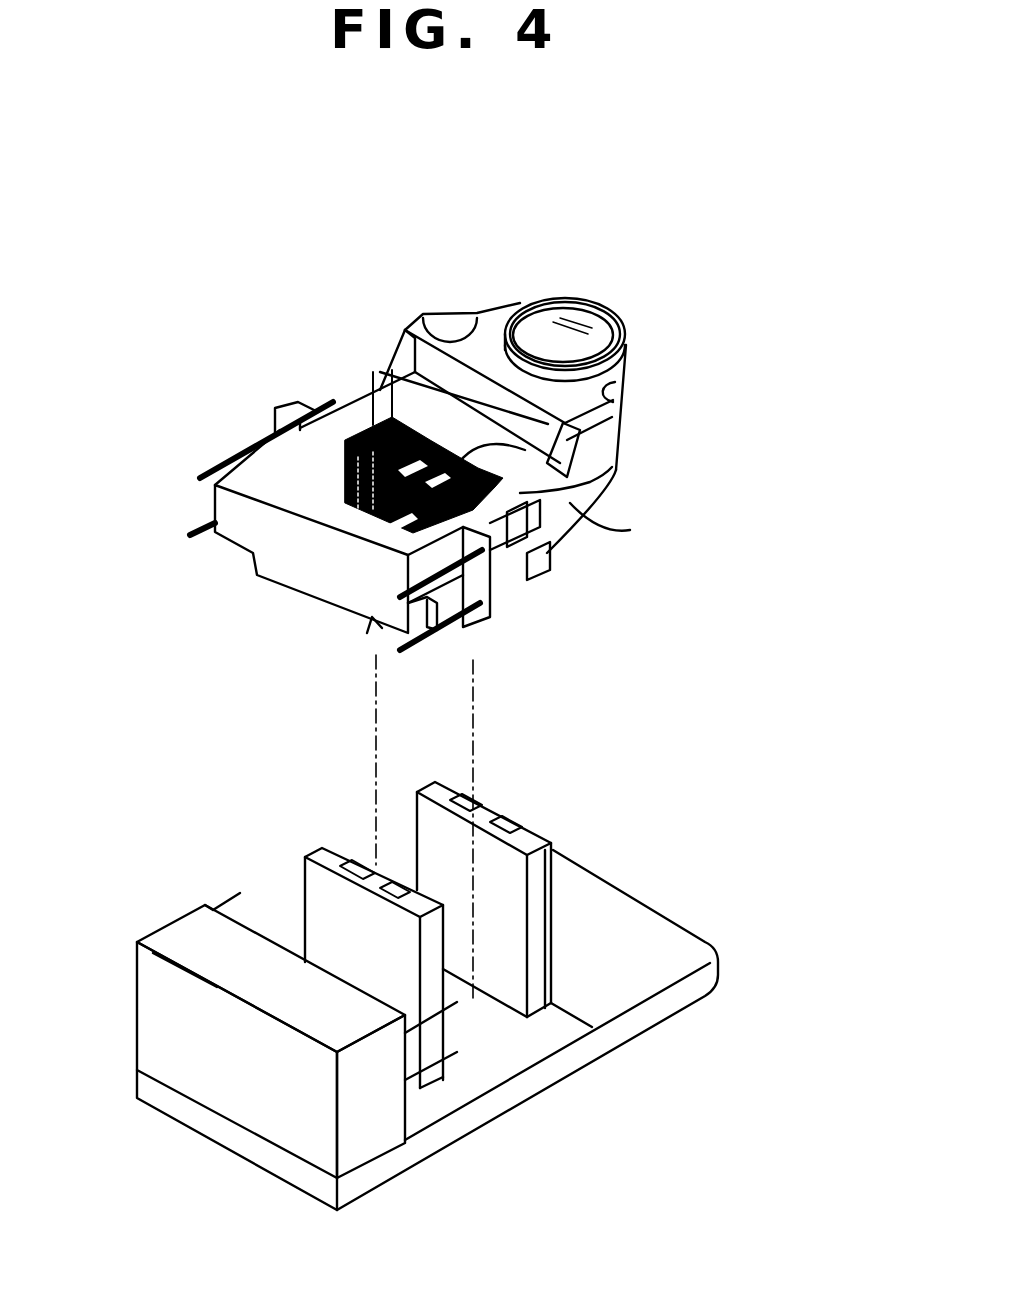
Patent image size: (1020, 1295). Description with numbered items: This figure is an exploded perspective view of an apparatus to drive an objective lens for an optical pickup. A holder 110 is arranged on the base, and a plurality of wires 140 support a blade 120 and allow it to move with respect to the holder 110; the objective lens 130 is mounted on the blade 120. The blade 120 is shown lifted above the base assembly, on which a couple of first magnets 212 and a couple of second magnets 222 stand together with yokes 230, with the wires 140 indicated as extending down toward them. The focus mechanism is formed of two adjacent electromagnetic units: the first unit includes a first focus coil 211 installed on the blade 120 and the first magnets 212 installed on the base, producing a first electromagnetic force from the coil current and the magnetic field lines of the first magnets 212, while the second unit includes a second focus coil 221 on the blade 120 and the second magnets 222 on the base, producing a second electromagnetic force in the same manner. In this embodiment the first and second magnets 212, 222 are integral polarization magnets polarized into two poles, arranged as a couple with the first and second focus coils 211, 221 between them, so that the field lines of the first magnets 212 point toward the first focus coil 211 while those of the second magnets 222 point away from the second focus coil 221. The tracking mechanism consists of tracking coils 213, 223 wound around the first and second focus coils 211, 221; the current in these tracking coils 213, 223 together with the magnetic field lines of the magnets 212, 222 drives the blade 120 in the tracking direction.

The holder 110 is at (182, 940).
The blade 120 is at (257, 463).
The objective lens 130 is at (577, 300).
The wires 140 is at (200, 527).
The first focus coil 211 is at (357, 420).
The first magnets 212 is at (430, 782).
The tracking coil 213 is at (397, 336).
The second focus coil 221 is at (610, 480).
The second magnets 222 is at (530, 953).
The tracking coil 223 is at (573, 513).
The yokes 230 is at (543, 833).